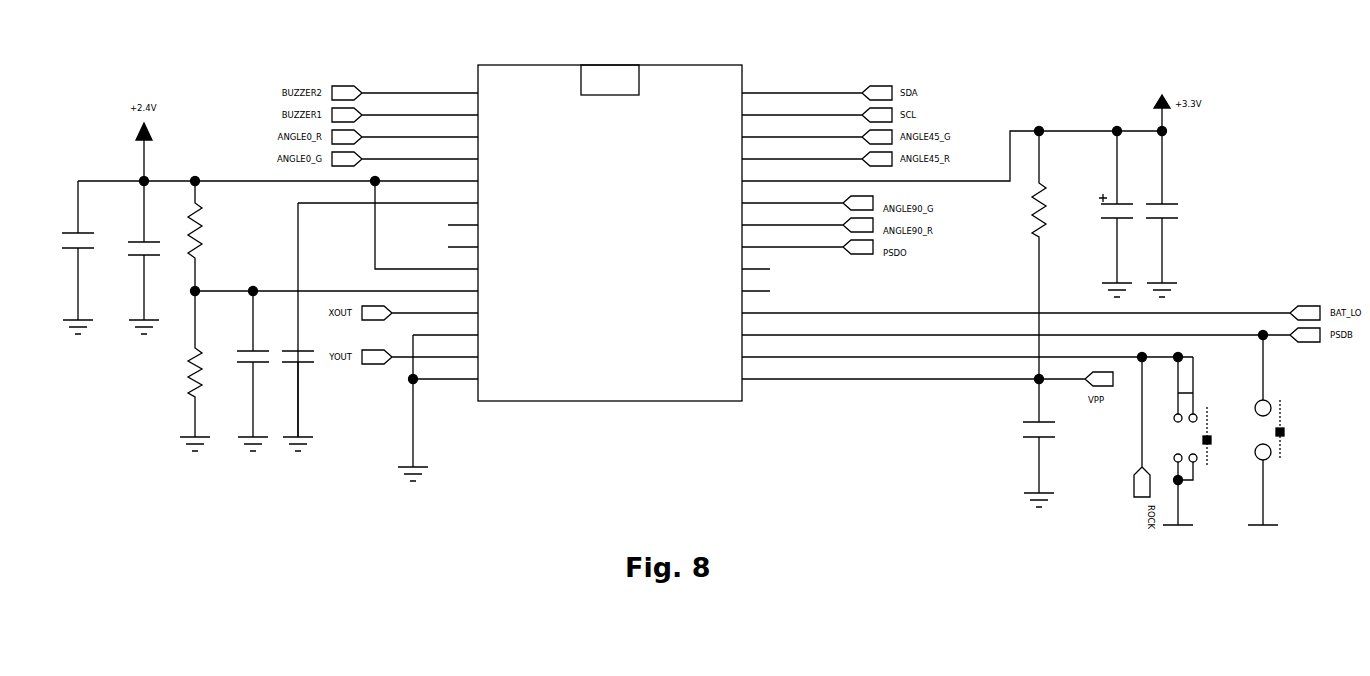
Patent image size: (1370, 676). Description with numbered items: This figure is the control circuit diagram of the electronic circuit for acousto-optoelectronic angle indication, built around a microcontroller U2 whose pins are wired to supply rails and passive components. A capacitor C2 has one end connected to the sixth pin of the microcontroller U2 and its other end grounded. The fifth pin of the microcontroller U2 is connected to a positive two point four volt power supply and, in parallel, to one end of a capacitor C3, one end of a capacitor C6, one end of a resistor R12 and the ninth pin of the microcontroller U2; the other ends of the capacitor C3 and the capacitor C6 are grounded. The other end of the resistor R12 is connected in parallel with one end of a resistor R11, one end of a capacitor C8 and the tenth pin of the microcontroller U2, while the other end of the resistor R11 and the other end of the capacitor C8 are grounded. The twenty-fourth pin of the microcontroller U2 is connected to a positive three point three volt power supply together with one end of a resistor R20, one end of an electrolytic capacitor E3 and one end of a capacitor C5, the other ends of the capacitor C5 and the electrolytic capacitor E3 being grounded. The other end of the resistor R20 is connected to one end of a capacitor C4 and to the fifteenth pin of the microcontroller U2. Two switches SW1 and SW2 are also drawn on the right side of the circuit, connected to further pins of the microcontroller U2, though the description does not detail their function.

The microcontroller U2 is at (609, 223).
The resistor R12 is at (206, 236).
The resistor R11 is at (185, 371).
The resistor R20 is at (1053, 255).
The capacitor C3 is at (68, 257).
The capacitor C6 is at (134, 257).
The capacitor C8 is at (242, 371).
The capacitor C2 is at (293, 401).
The capacitor C4 is at (1037, 443).
The capacitor C5 is at (1163, 214).
The electrolytic capacitor E3 is at (1117, 214).
The switch SW1 is at (1199, 441).
The switch SW2 is at (1283, 430).